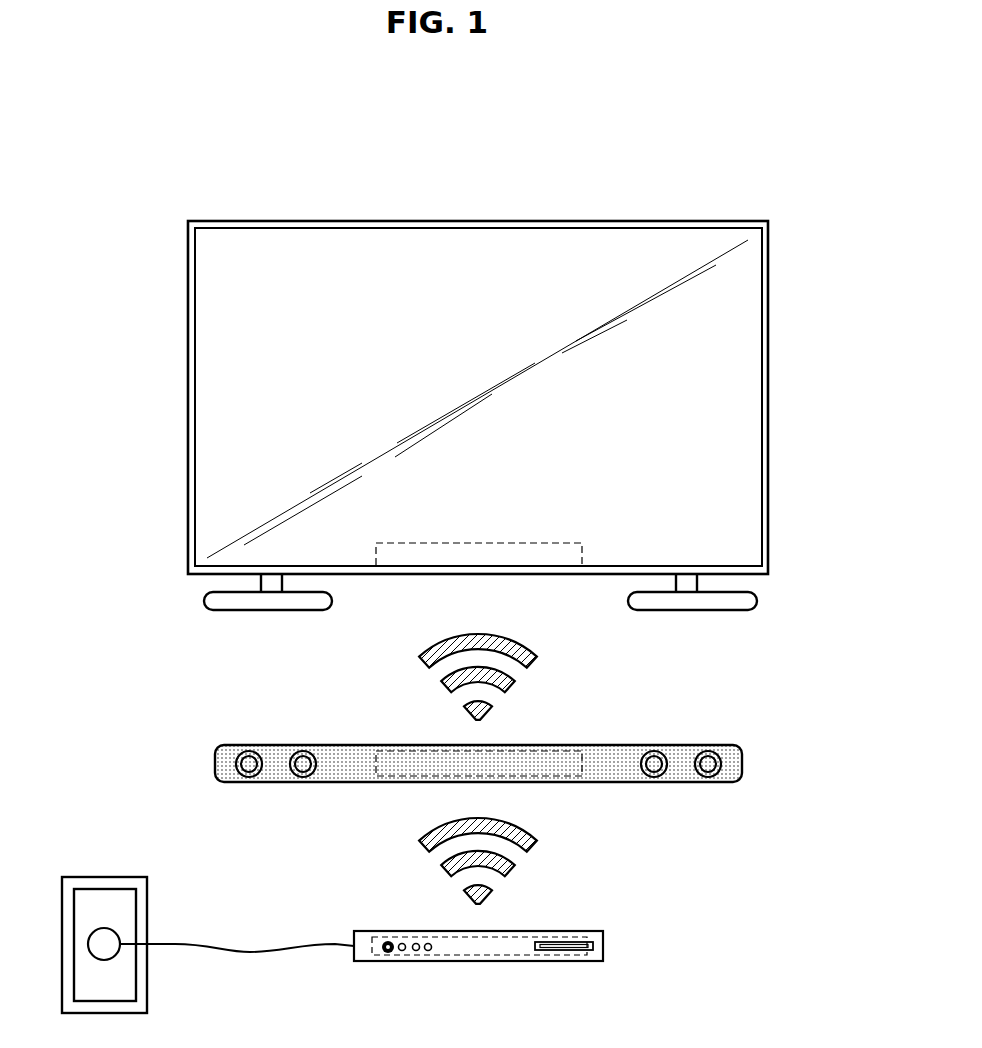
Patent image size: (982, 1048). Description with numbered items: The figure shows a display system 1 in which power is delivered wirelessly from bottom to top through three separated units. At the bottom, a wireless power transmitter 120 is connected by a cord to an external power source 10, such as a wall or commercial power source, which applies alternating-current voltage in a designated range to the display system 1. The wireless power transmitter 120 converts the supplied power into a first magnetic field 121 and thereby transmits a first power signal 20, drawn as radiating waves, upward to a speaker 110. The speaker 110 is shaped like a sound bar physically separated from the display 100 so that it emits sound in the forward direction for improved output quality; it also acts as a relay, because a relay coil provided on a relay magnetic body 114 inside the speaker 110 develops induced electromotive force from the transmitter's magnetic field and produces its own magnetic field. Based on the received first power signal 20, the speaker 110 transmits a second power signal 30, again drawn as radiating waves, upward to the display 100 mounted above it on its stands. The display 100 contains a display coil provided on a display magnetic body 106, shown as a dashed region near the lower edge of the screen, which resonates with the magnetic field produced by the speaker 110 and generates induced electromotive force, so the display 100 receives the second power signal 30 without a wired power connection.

The display system 1 is at (787, 188).
The display 100 is at (665, 220).
The display magnetic body 106 is at (560, 542).
The second power signal 30 is at (428, 683).
The speaker 110 is at (742, 764).
The relay magnetic body 114 is at (561, 750).
The first power signal 20 is at (428, 866).
The external power source 10 is at (120, 876).
The wireless power transmitter 120 is at (603, 946).
The first magnetic field 121 is at (565, 937).